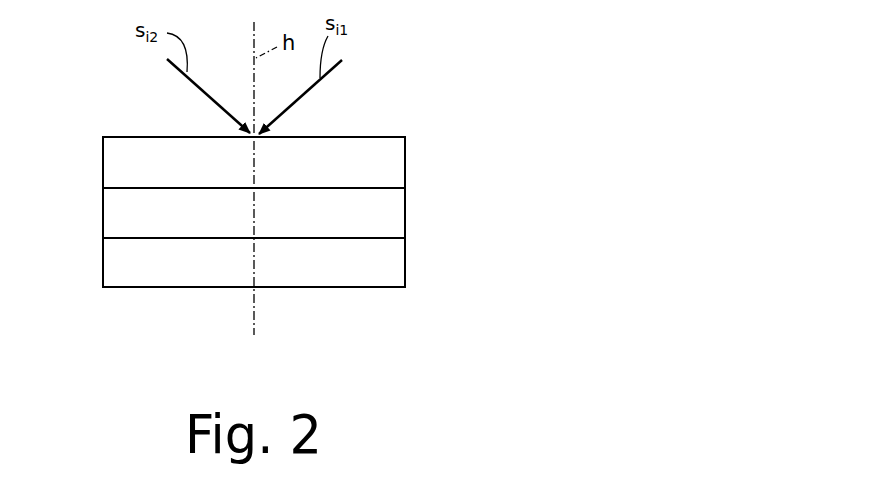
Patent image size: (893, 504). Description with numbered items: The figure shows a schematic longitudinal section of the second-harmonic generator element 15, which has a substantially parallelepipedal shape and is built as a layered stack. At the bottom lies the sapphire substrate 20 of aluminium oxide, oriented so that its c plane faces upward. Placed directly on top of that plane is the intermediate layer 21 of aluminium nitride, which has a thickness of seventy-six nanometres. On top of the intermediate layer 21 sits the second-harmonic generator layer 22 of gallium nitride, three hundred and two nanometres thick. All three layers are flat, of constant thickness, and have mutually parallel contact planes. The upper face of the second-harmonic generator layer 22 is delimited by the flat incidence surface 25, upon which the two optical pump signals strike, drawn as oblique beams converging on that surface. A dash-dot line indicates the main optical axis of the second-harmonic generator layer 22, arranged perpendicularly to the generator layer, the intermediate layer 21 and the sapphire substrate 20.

The second-harmonic generator element 15 is at (387, 107).
The sapphire substrate 20 is at (398, 260).
The intermediate layer 21 is at (397, 212).
The second-harmonic generator layer 22 is at (393, 165).
The incidence surface 25 is at (139, 132).